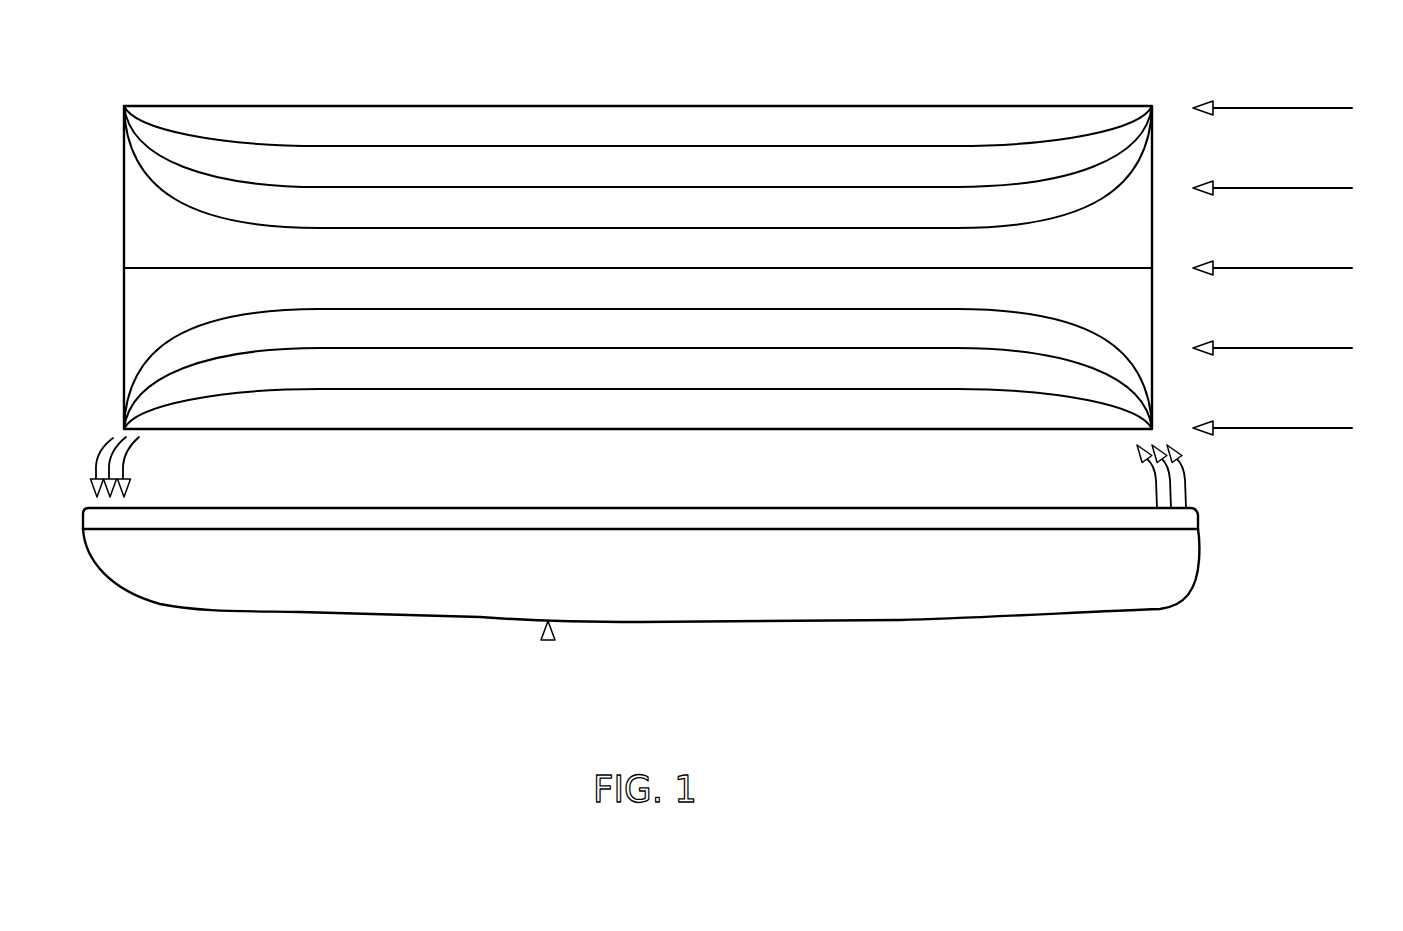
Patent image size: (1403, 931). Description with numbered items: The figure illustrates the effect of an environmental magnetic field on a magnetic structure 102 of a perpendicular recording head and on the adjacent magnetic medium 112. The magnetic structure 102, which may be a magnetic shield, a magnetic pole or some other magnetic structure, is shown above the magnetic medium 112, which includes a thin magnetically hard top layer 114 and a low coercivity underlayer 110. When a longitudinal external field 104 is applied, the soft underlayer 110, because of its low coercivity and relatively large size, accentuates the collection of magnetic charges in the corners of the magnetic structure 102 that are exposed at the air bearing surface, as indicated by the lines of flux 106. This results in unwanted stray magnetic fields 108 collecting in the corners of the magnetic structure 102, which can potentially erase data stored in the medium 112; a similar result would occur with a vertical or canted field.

The magnetic structure 102 is at (753, 106).
The longitudinal external field 104 is at (1276, 108).
The lines of flux 106 is at (748, 146).
The stray magnetic fields 108 is at (141, 438).
The low coercivity underlayer 110 is at (540, 572).
The magnetic medium 112 is at (548, 640).
The magnetically hard top layer 114 is at (500, 508).